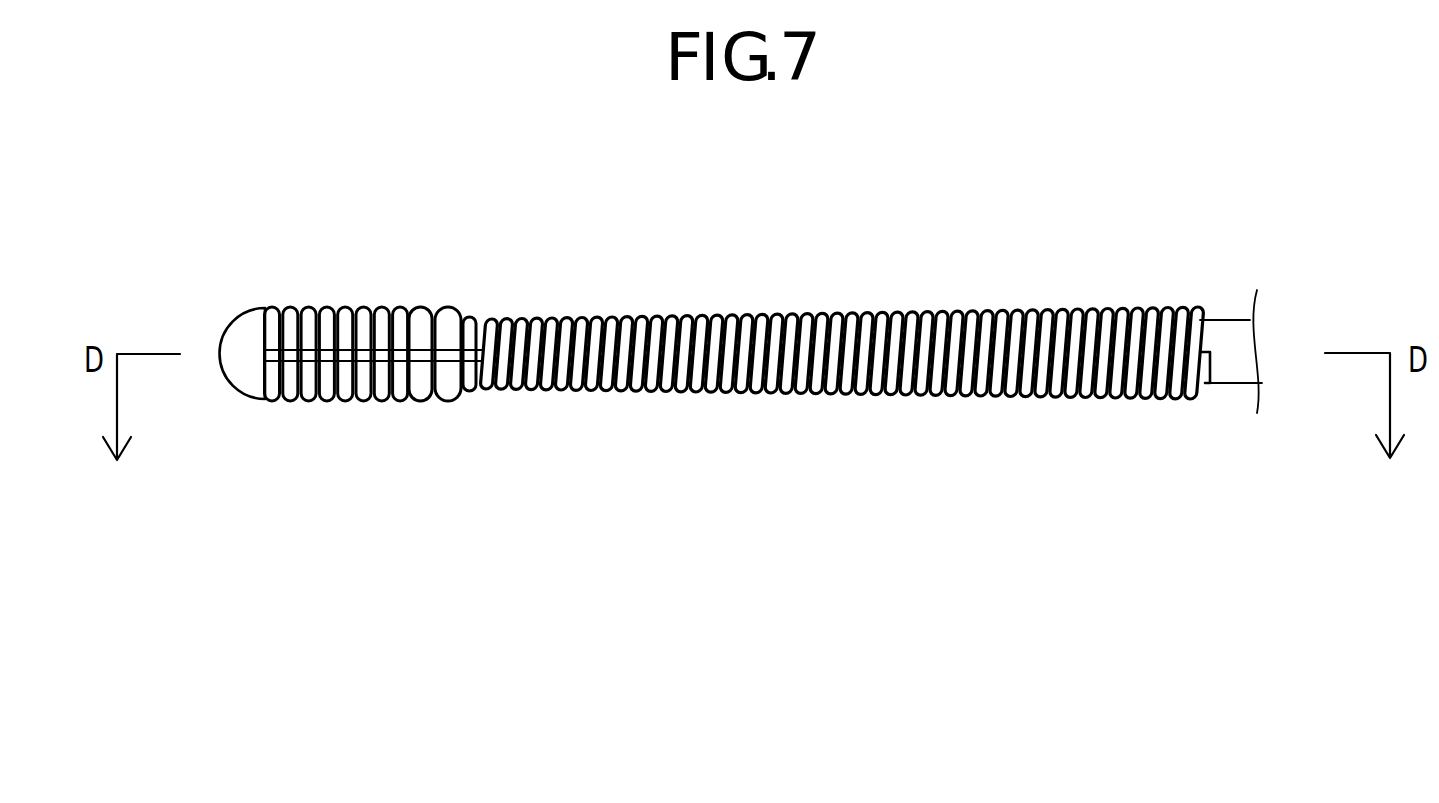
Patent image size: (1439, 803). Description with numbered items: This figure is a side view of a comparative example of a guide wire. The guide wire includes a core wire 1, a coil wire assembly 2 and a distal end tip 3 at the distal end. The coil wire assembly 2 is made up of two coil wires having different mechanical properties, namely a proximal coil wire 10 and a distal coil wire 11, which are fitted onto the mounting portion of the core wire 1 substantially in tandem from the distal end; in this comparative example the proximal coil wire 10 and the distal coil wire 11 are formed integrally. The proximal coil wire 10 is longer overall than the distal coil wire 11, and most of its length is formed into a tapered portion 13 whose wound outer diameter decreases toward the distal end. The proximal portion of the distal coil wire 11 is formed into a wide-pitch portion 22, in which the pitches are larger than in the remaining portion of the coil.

The core wire 1 is at (1239, 299).
The coil wire assembly 2 is at (708, 284).
The distal end tip 3 is at (250, 316).
The proximal coil wire 10 is at (897, 285).
The distal coil wire 11 is at (351, 283).
The tapered portion 13 is at (558, 316).
The wide-pitch portion 22 is at (433, 316).